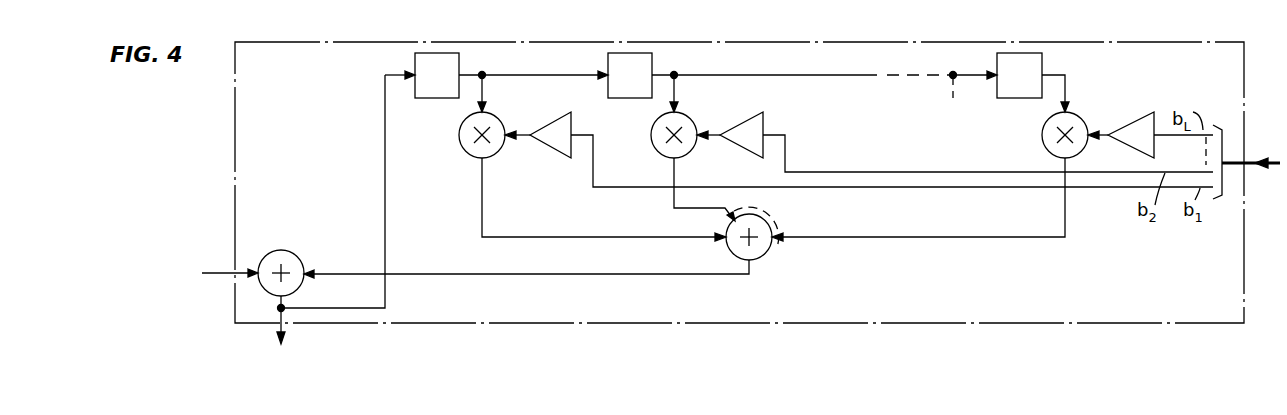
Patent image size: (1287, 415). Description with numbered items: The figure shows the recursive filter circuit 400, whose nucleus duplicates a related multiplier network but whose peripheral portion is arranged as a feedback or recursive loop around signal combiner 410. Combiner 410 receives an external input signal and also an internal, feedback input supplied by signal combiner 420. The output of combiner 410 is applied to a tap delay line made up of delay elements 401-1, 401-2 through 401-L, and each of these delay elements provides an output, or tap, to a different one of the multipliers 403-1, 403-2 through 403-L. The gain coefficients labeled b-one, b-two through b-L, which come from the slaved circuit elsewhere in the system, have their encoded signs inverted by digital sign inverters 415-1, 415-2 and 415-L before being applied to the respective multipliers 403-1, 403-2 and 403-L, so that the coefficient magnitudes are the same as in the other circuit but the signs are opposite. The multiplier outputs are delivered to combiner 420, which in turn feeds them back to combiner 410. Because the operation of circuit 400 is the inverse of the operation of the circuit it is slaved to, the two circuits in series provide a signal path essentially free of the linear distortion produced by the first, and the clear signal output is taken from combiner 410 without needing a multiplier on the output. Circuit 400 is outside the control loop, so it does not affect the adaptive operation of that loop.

The recursive filter circuit 400 is at (240, 135).
The delay element 401-1 is at (415, 63).
The delay element 401-2 is at (608, 63).
The delay element 401-L is at (997, 63).
The multiplier 403-1 is at (465, 150).
The multiplier 403-2 is at (659, 150).
The multiplier 403-L is at (1046, 150).
The digital sign inverter 415-1 is at (548, 124).
The digital sign inverter 415-2 is at (740, 124).
The digital sign inverter 415-L is at (1136, 124).
The signal combiner 410 is at (289, 251).
The signal combiner 420 is at (767, 252).